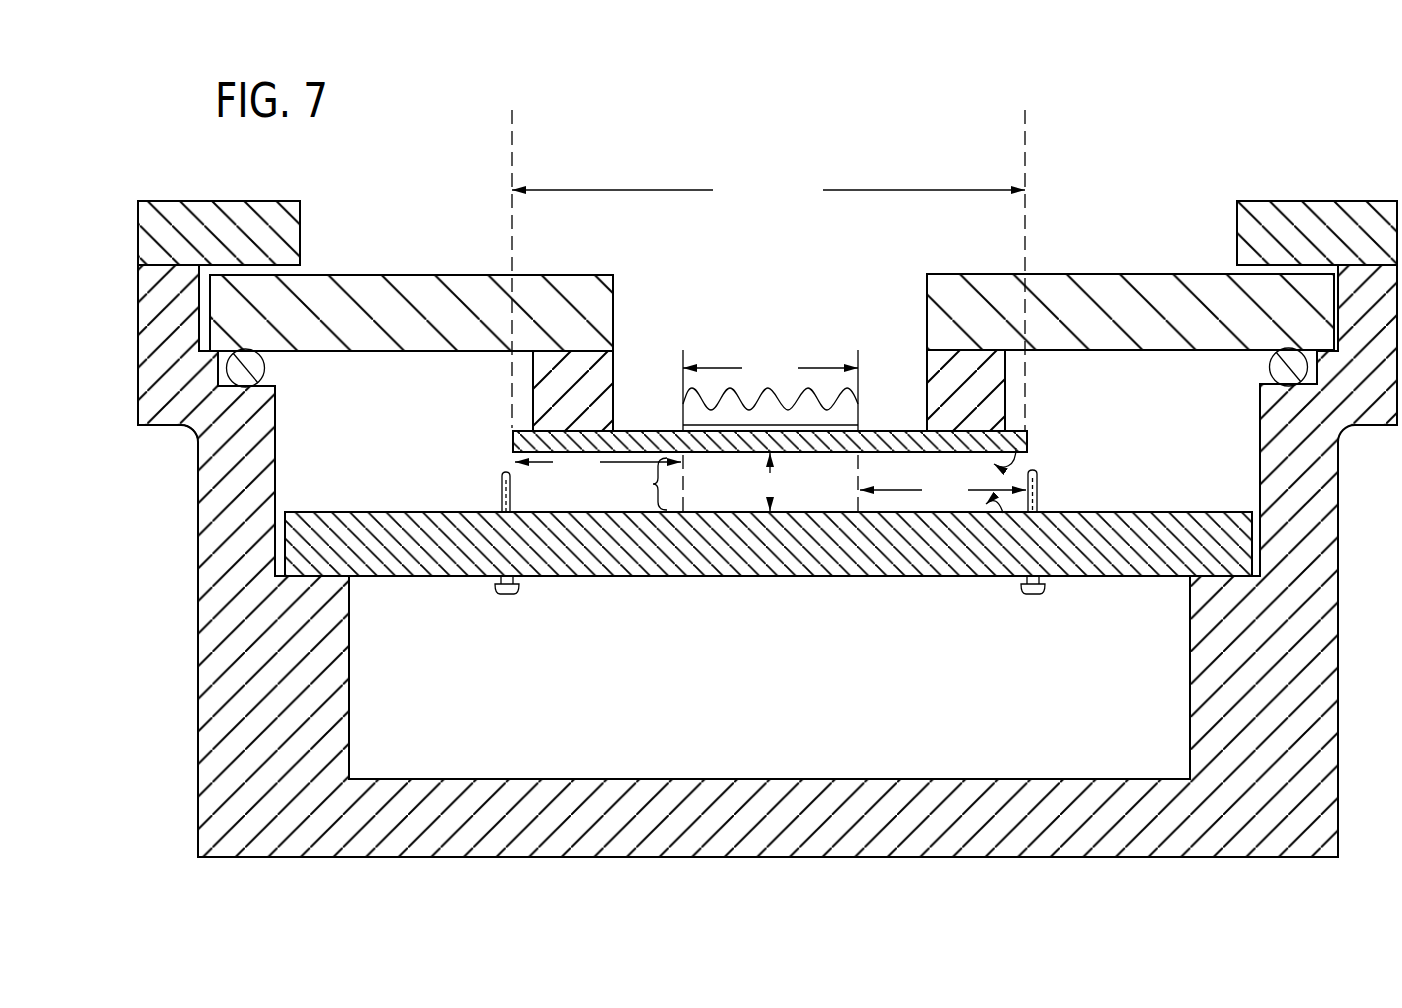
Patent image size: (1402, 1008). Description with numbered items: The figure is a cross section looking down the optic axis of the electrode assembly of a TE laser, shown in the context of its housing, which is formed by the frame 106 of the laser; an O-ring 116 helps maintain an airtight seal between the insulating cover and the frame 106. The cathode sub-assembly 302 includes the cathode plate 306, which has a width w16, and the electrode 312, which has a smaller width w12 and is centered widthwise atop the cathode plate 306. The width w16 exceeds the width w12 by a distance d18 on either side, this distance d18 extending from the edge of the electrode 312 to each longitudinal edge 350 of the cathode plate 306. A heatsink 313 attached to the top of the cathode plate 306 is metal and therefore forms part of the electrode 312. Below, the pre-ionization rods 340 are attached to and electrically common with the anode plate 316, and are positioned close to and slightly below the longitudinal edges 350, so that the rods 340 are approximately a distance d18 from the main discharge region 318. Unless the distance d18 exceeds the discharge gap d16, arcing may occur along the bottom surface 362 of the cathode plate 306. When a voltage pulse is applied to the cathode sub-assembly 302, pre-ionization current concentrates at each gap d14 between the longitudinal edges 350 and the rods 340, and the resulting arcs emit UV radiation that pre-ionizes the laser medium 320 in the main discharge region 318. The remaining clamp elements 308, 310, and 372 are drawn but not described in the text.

The frame 106 is at (211, 669).
The O-ring 116 is at (198, 440).
The cathode sub-assembly 302 is at (717, 352).
The cathode plate 306 is at (533, 429).
The right clamp block 308 is at (930, 362).
The right clamp ring 310 is at (1117, 290).
The electrode 312 is at (698, 418).
The heatsink 313 is at (855, 398).
The anode plate 316 is at (833, 562).
The laser medium 320 is at (598, 505).
The pre-ionization rods 340 is at (1037, 490).
The longitudinal edges 350 is at (513, 432).
The bottom surface 362 is at (1027, 431).
The opening 372 is at (1003, 513).
The main discharge region 318 is at (636, 484).
The cathode plate width w16 is at (768, 270).
The electrode width w12 is at (770, 369).
The gap d14 is at (499, 459).
The discharge gap d16 is at (770, 482).
The distance d18 is at (770, 479).